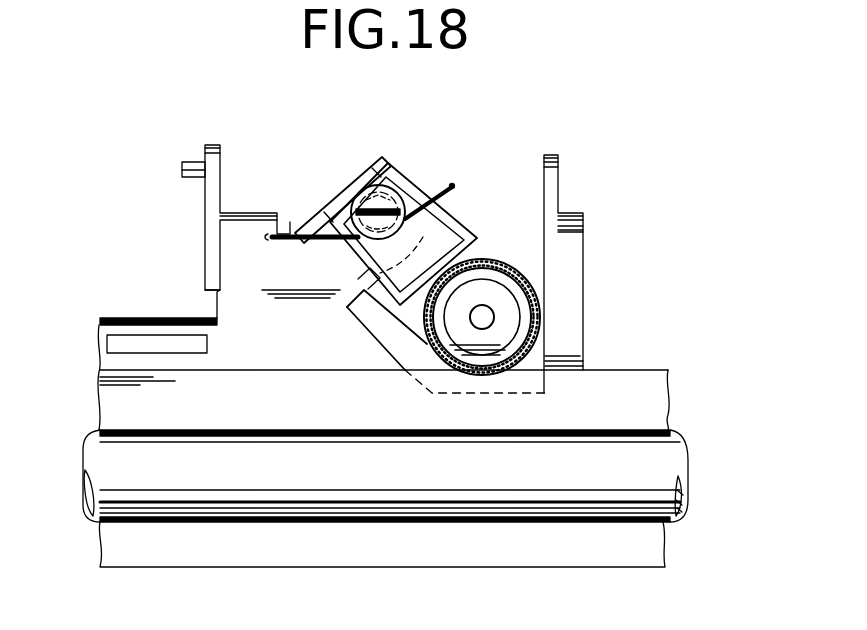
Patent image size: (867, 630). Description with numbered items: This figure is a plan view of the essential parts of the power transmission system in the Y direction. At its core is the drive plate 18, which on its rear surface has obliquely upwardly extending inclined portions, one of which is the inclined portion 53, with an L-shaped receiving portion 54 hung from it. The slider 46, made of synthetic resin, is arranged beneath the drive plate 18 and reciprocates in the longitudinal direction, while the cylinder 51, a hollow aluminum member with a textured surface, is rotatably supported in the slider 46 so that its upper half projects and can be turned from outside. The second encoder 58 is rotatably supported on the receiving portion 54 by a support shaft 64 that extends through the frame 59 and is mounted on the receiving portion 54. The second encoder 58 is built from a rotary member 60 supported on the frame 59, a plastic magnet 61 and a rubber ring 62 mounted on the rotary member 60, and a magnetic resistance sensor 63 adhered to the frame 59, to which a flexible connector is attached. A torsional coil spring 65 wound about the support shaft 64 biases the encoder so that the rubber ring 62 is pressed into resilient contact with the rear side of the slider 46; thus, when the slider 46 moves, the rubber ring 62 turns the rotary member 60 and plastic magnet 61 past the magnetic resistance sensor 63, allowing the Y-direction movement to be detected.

The drive plate 18 is at (120, 318).
The slider 46 is at (602, 383).
The cylinder 51 is at (675, 458).
The inclined portion 53 is at (232, 247).
The receiving portion 54 is at (310, 224).
The second encoder 58 is at (417, 166).
The frame 59 is at (387, 157).
The rotary member 60 is at (508, 305).
The plastic magnet 61 is at (513, 265).
The rubber ring 62 is at (537, 312).
The magnetic resistance sensor 63 is at (480, 240).
The support shaft 64 is at (352, 182).
The torsional coil spring 65 is at (457, 185).